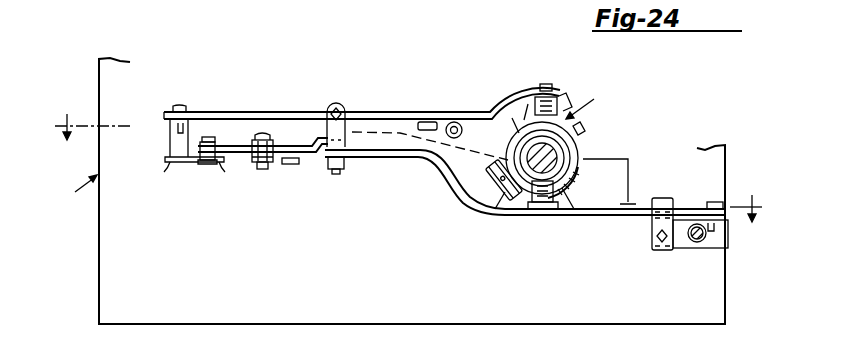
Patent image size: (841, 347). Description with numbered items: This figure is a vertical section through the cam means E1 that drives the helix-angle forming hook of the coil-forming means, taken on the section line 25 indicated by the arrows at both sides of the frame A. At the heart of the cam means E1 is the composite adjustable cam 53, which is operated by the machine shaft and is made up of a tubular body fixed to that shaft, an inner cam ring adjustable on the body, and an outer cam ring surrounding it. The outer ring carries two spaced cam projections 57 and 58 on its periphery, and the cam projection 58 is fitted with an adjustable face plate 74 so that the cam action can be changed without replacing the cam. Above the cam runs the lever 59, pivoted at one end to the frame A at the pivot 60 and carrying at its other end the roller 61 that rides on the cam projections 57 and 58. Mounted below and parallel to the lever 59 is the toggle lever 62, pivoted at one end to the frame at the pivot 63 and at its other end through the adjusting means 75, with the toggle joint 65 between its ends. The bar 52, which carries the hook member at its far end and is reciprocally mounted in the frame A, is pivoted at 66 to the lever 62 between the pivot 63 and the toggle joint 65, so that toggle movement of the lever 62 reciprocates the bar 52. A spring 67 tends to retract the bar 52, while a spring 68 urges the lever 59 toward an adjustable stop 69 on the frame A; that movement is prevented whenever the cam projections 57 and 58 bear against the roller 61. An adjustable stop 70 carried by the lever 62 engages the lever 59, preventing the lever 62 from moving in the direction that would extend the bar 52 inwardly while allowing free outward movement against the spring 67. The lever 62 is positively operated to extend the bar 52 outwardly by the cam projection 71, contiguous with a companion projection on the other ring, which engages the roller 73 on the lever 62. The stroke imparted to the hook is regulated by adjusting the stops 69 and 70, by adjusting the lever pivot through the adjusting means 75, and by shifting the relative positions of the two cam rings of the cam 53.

The section line 25- 25 is at (407, 159).
The frame A is at (78, 194).
The bar 52 is at (266, 138).
The composite adjustable cam 53 is at (584, 150).
The cam projection 57 is at (527, 118).
The cam projection 58 is at (492, 191).
The lever 59 is at (377, 117).
The pivot 60 is at (179, 105).
The roller 61 is at (553, 100).
The toggle lever 62 is at (318, 151).
The pivot 63 is at (208, 167).
The toggle joint 65 is at (337, 171).
The pivot 66 is at (259, 135).
The spring 67 is at (259, 168).
The spring 68 is at (476, 133).
The adjustable stop 69 is at (430, 119).
The adjustable stop 70 is at (336, 104).
The cam projection 71 is at (567, 182).
The roller 73 is at (553, 201).
The adjustable face plate 74 is at (513, 196).
The adjusting means 75 is at (690, 240).
The cam means E1 is at (593, 104).